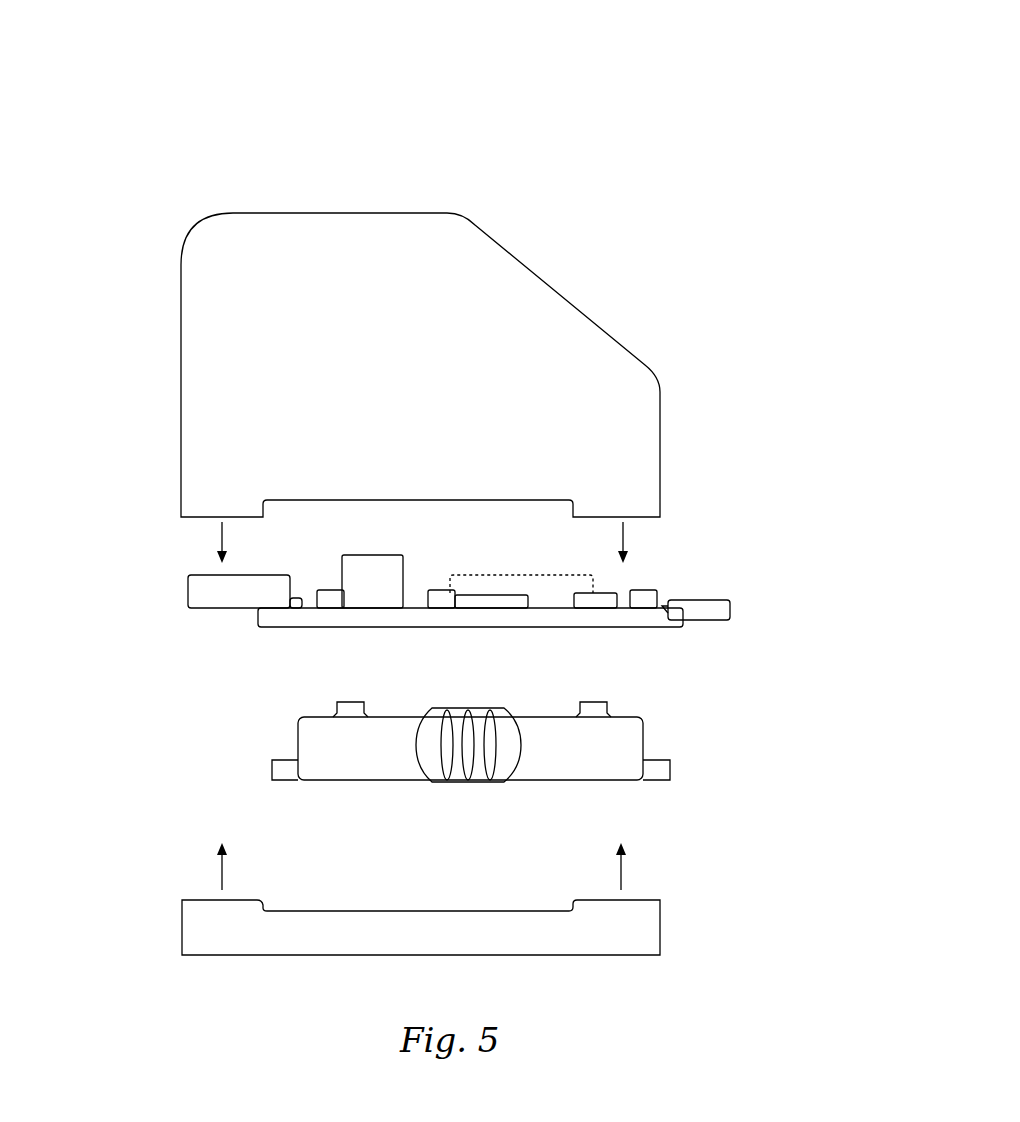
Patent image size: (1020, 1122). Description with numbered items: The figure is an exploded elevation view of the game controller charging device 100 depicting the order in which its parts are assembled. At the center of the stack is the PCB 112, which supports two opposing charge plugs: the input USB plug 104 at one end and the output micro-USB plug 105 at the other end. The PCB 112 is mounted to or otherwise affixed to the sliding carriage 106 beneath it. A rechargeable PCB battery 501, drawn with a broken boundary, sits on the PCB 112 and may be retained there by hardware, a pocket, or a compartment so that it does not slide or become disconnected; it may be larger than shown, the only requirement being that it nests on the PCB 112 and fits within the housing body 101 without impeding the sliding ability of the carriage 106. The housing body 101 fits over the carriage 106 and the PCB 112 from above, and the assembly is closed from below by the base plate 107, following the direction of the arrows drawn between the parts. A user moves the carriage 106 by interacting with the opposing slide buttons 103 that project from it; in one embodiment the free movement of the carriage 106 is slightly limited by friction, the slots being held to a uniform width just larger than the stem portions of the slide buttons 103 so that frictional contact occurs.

The game controller charging device 100 is at (437, 103).
The housing body 101 is at (180, 325).
The slide buttons 103 is at (520, 752).
The input USB plug 104 is at (188, 598).
The output micro-USB plug 105 is at (732, 612).
The sliding carriage 106 is at (298, 740).
The base plate 107 is at (660, 927).
The PCB 112 is at (410, 641).
The rechargeable PCB battery 501 is at (518, 575).